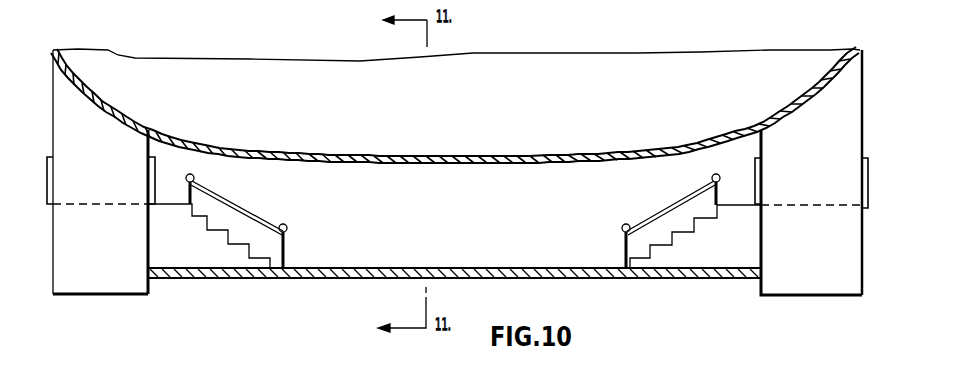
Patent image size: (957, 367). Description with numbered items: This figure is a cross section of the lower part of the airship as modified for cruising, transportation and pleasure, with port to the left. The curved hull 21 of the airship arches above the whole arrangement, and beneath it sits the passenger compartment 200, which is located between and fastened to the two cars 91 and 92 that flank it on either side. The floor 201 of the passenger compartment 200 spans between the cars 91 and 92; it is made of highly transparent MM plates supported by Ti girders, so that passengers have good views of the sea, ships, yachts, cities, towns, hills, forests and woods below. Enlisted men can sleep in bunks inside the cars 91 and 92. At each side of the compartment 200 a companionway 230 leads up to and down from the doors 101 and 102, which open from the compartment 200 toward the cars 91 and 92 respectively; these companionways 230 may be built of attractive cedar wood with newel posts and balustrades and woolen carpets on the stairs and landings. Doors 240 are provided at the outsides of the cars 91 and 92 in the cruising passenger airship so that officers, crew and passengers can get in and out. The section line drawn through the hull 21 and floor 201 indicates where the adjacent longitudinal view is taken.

The hull 21 is at (347, 155).
The car 91 is at (81, 283).
The car 92 is at (783, 285).
The door 101 is at (147, 171).
The door 102 is at (760, 173).
The passenger compartment 200 is at (497, 215).
The floor 201 is at (371, 278).
The companionway 230 is at (252, 204).
The door 240 is at (54, 178).